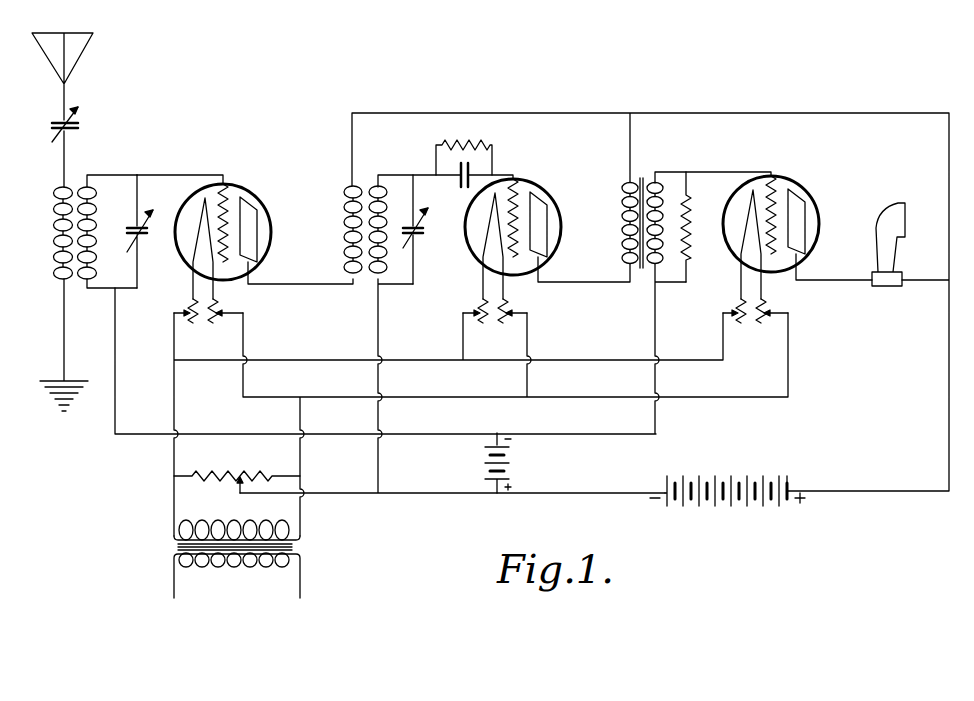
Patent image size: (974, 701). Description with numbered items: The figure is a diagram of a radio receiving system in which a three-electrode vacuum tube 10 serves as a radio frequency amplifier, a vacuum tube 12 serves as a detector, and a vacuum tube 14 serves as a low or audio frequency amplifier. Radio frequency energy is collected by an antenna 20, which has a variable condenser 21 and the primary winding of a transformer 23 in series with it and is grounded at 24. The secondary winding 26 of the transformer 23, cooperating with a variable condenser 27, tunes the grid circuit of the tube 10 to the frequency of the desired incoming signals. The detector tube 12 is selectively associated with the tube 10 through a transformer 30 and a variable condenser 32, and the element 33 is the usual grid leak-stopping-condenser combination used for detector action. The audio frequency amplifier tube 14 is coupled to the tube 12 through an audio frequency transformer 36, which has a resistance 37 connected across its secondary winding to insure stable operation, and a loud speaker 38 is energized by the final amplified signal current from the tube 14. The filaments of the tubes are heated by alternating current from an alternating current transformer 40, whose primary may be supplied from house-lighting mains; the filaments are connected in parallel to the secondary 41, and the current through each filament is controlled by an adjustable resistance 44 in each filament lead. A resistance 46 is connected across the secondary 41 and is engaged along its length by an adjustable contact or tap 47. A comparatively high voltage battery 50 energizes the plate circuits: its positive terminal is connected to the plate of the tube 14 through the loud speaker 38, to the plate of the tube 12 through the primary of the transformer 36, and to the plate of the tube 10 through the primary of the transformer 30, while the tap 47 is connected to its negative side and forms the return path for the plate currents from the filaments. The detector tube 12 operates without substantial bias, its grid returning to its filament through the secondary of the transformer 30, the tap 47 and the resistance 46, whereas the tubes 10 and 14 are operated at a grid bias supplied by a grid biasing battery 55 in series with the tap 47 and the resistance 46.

The antenna 20 is at (86, 56).
The variable condenser 21 is at (80, 124).
The transformer 23 is at (74, 184).
The ground 24 is at (60, 398).
The secondary winding 26 is at (97, 220).
The variable condenser 27 is at (146, 240).
The three-electrode vacuum tube 10 is at (270, 220).
The adjustable resistances 44 is at (188, 306).
The transformer 30 is at (364, 288).
The variable condenser 32 is at (421, 233).
The grid leak-stopping-condenser combination 33 is at (494, 160).
The vacuum tube 12 is at (553, 195).
The audio frequency transformer 36 is at (642, 272).
The resistance 37 is at (697, 250).
The vacuum tube 14 is at (812, 196).
The loud speaker 38 is at (896, 258).
The grid biasing battery 55 is at (512, 467).
The battery 50 is at (762, 478).
The resistance 46 is at (206, 475).
The adjustable contact or tap 47 is at (238, 494).
The secondary 41 is at (286, 528).
The alternating current transformer 40 is at (292, 546).